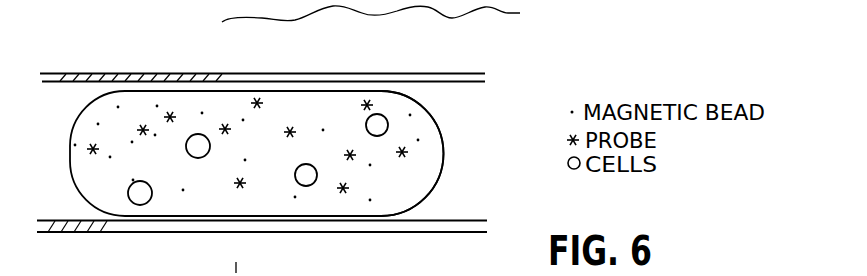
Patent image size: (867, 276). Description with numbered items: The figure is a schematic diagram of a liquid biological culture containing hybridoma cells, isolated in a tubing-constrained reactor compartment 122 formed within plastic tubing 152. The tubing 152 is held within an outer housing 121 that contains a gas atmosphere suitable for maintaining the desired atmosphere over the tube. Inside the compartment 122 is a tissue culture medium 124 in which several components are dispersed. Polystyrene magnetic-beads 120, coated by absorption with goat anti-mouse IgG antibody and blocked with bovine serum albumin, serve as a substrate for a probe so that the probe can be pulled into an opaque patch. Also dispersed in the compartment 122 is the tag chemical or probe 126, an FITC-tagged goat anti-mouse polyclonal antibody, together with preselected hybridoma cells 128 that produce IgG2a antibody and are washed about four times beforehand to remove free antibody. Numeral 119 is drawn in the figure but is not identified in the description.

The tubing 152 is at (59, 74).
The lower plate 119 is at (276, 200).
The magnetic-beads 120 is at (347, 103).
The outer housing 121 is at (505, 13).
The tissue culture medium 124 is at (428, 120).
The probe 126 is at (405, 153).
The reactor compartment 122 is at (433, 193).
The hybridoma cells 128 is at (141, 205).